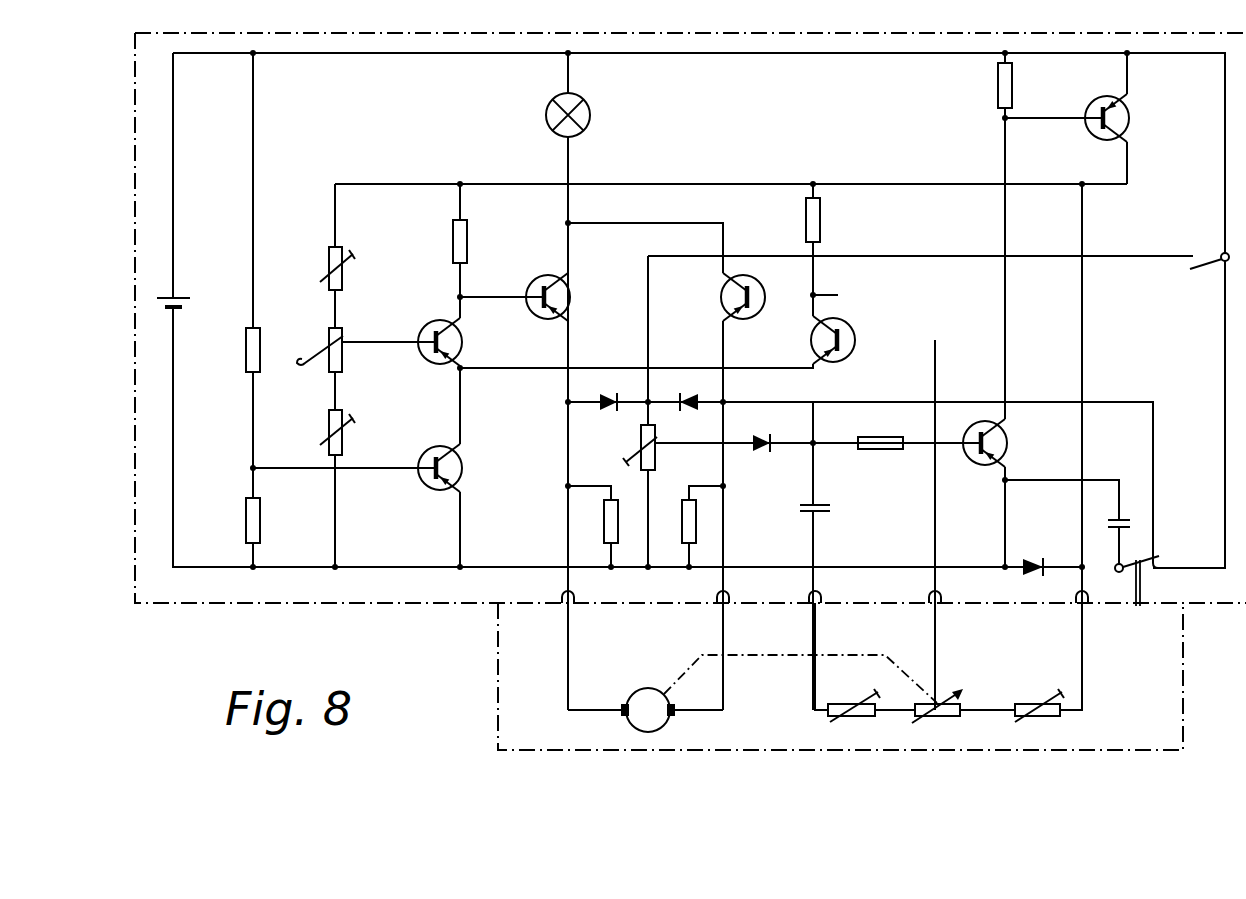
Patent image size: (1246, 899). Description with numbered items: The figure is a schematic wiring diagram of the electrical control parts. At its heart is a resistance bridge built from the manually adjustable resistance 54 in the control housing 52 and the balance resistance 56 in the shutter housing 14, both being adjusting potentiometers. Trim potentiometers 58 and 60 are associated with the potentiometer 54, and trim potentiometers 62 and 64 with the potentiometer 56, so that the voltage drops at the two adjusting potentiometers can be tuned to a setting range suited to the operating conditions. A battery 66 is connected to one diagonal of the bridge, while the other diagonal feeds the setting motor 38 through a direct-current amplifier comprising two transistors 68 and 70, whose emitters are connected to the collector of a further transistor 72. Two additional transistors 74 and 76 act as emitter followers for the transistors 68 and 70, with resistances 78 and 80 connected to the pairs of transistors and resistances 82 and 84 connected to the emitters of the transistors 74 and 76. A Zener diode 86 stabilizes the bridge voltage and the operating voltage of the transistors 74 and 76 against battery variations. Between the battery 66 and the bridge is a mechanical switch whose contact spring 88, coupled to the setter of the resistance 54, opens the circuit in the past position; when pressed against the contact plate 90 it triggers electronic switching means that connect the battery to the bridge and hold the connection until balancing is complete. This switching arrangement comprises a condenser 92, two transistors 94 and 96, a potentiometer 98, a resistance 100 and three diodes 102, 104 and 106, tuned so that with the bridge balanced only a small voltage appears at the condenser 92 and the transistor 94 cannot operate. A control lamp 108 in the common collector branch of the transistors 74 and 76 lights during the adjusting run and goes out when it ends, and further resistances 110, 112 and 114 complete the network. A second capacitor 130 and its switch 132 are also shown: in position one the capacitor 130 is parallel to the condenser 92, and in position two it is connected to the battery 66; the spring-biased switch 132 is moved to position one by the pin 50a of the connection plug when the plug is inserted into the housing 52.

The shutter housing 14 is at (498, 677).
The setting motor 38 is at (645, 689).
The pin 50a is at (1143, 588).
The control housing 52 is at (438, 606).
The manually adjustable resistance 54 is at (331, 334).
The balance resistance 56 is at (937, 717).
The trim potentiometer 58 is at (333, 255).
The trim potentiometer 60 is at (330, 426).
The trim potentiometer 62 is at (854, 717).
The trim potentiometer 64 is at (1039, 717).
The battery 66 is at (182, 302).
The transistor 68 is at (429, 325).
The transistor 70 is at (853, 326).
The transistor 72 is at (425, 482).
The transistor 74 is at (537, 275).
The transistor 76 is at (720, 297).
The resistance 78 is at (455, 233).
The resistance 80 is at (818, 220).
The resistance 82 is at (606, 526).
The resistance 84 is at (694, 516).
The Zener diode 86 is at (1032, 549).
The contact spring 88 is at (1203, 268).
The contact plate 90 is at (1196, 252).
The condenser 92 is at (826, 509).
The transistor 94 is at (982, 463).
The transistor 96 is at (1130, 120).
The potentiometer 98 is at (640, 440).
The resistance 100 is at (880, 449).
The diode 102 is at (606, 390).
The diode 104 is at (692, 390).
The diode 106 is at (768, 430).
The control lamp 108 is at (588, 116).
The resistance 110 is at (247, 520).
The resistance 112 is at (247, 353).
The resistance 114 is at (997, 90).
The second capacitor 130 is at (1126, 516).
The switch 132 is at (1152, 561).